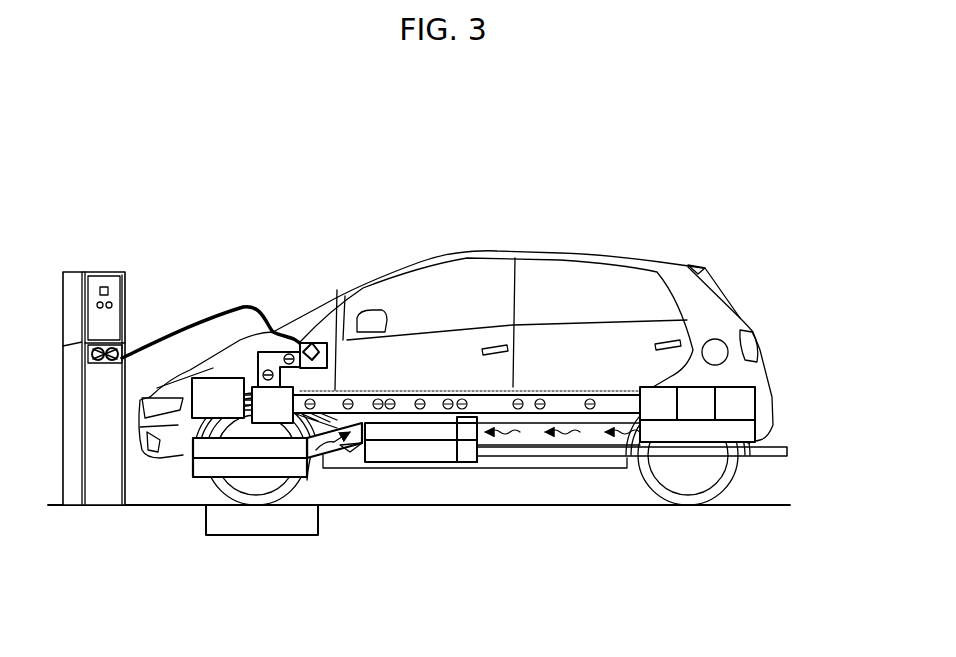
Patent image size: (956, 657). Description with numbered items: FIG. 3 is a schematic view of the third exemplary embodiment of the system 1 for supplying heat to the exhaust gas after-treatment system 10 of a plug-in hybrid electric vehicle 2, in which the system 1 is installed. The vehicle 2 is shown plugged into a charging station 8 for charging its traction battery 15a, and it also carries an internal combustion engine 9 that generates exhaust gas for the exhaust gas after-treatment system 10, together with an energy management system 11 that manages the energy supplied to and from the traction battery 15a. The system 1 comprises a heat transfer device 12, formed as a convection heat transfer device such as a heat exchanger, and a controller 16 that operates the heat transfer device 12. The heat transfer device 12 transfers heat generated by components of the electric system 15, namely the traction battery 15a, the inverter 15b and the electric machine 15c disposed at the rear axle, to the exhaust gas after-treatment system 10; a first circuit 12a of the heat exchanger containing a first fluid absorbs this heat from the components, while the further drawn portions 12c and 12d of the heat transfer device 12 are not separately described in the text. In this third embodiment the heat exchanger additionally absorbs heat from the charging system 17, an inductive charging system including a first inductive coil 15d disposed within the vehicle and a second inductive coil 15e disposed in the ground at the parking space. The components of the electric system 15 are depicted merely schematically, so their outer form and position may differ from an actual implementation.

The system for supplying heat 1 is at (512, 481).
The plug-in hybrid electric vehicle 2 is at (554, 238).
The charging station 8 is at (105, 272).
The internal combustion engine 9 is at (222, 388).
The energy management system 11 is at (258, 393).
The exhaust gas after-treatment system 10 is at (442, 451).
The heat transfer device 12 is at (330, 446).
The first circuit 12a is at (733, 434).
The front heat exchanger upper part 12c is at (248, 450).
The heat exchanger 12d is at (397, 434).
The electric system 15 is at (780, 390).
The traction battery 15a is at (657, 413).
The inverter 15b is at (697, 413).
The electric machine 15c is at (756, 410).
The first inductive coil 15d is at (270, 470).
The second inductive coil 15e is at (218, 536).
The controller 16 is at (460, 418).
The charging system 17 is at (181, 533).